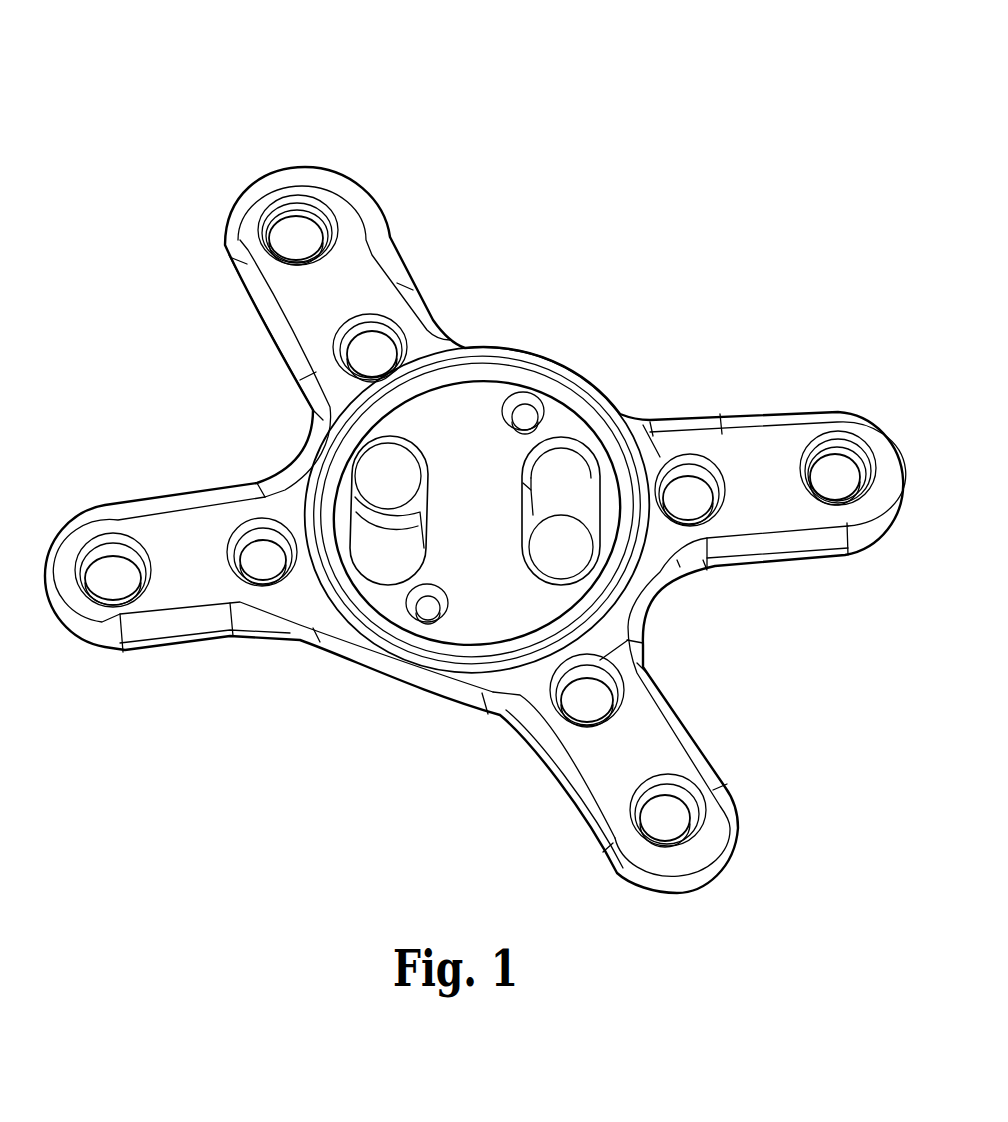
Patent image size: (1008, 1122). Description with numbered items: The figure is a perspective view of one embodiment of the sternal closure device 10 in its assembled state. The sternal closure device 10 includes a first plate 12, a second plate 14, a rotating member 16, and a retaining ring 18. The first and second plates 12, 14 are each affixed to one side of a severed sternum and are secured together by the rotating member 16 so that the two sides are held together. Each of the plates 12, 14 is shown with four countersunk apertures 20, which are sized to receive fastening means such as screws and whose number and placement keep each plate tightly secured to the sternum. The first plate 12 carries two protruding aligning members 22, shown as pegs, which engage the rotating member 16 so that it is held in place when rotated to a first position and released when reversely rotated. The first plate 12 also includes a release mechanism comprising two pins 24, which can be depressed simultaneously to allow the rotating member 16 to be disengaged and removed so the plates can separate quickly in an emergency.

The sternal closure device 10 is at (332, 172).
The first plate 12 is at (407, 273).
The second plate 14 is at (760, 463).
The rotating member 16 is at (557, 420).
The retaining ring 18 is at (500, 372).
The countersunk apertures 20 is at (305, 235).
The protruding aligning members 22 is at (381, 468).
The pins 24 is at (425, 612).